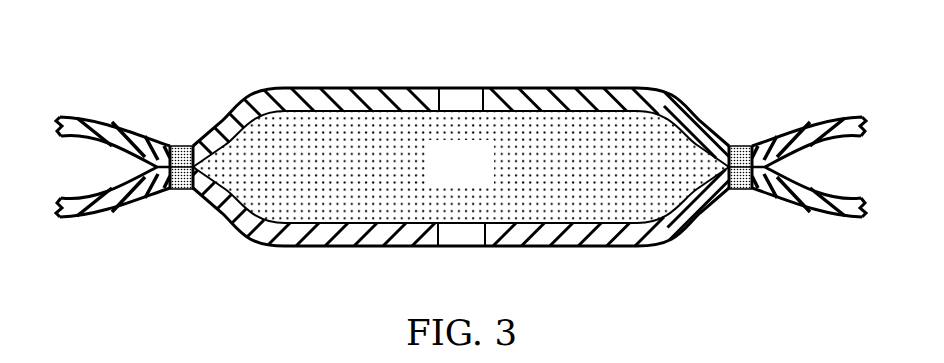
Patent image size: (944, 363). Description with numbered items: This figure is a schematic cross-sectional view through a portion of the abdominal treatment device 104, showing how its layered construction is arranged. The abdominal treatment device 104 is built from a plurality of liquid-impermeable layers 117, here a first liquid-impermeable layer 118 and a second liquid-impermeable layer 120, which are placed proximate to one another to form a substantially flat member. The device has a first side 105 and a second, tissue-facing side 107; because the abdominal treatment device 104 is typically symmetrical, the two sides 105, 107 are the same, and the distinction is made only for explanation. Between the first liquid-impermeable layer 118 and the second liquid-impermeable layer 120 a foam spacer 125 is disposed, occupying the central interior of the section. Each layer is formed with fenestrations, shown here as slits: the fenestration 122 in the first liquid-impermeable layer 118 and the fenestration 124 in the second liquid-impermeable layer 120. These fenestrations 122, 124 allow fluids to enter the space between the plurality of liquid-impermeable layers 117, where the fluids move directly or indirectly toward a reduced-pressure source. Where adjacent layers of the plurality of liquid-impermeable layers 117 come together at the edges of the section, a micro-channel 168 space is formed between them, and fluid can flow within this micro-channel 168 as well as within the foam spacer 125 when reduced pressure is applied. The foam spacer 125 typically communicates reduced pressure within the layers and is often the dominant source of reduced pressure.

The abdominal treatment device 104 is at (612, 83).
The first side 105 is at (387, 87).
The second, tissue-facing side 107 is at (310, 247).
The plurality of liquid-impermeable layers 117 is at (304, 87).
The first liquid-impermeable layer 118 is at (532, 87).
The second liquid-impermeable layer 120 is at (563, 247).
The fenestration 122 is at (482, 103).
The fenestration 124 is at (455, 237).
The foam spacer 125 is at (482, 181).
The micro-channel 168 is at (245, 134).